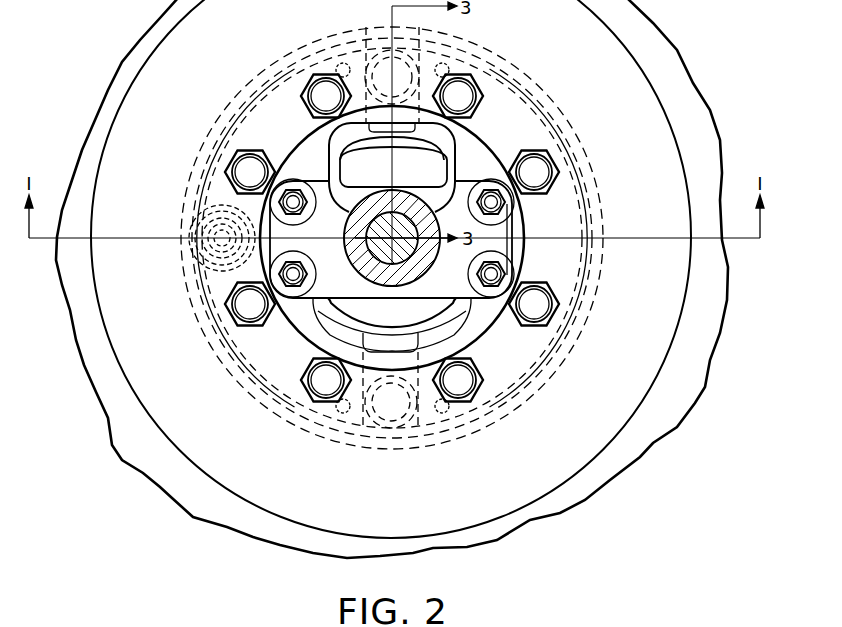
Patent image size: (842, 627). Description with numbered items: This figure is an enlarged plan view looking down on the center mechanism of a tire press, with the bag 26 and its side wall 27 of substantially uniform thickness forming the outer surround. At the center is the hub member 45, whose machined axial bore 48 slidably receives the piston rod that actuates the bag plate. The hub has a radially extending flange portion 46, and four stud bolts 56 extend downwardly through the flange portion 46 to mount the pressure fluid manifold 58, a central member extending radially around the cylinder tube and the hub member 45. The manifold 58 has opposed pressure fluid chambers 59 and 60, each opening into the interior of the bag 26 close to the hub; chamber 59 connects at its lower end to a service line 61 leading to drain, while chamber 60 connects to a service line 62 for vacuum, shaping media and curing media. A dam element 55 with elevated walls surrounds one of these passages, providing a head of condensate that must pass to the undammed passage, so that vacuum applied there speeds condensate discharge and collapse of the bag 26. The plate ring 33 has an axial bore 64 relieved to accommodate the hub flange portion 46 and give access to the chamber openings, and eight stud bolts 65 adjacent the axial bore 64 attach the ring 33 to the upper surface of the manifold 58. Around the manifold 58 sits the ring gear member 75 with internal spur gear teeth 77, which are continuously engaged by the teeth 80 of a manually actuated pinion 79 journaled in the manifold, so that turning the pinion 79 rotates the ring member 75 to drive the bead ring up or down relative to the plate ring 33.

The bag 26 is at (675, 425).
The side wall 27 is at (688, 370).
The plate ring 33 is at (187, 38).
The ring gear member 75 is at (255, 72).
The internal spur gear teeth 77 is at (200, 168).
The pinion 79 is at (215, 232).
The pinion teeth 80 is at (218, 241).
The flange portion 46 is at (262, 232).
The axial bore 64 is at (560, 260).
The stud bolts 65 is at (323, 92).
The pressure fluid manifold 58 is at (530, 341).
The stud bolts 56 is at (294, 197).
The dam element 55 is at (427, 137).
The pressure fluid chamber 59 is at (423, 170).
The service line 61 is at (400, 62).
The service line 62 is at (410, 405).
The pressure fluid chamber 60 is at (405, 345).
The axial bore 48 is at (407, 249).
The hub member 45 is at (407, 272).